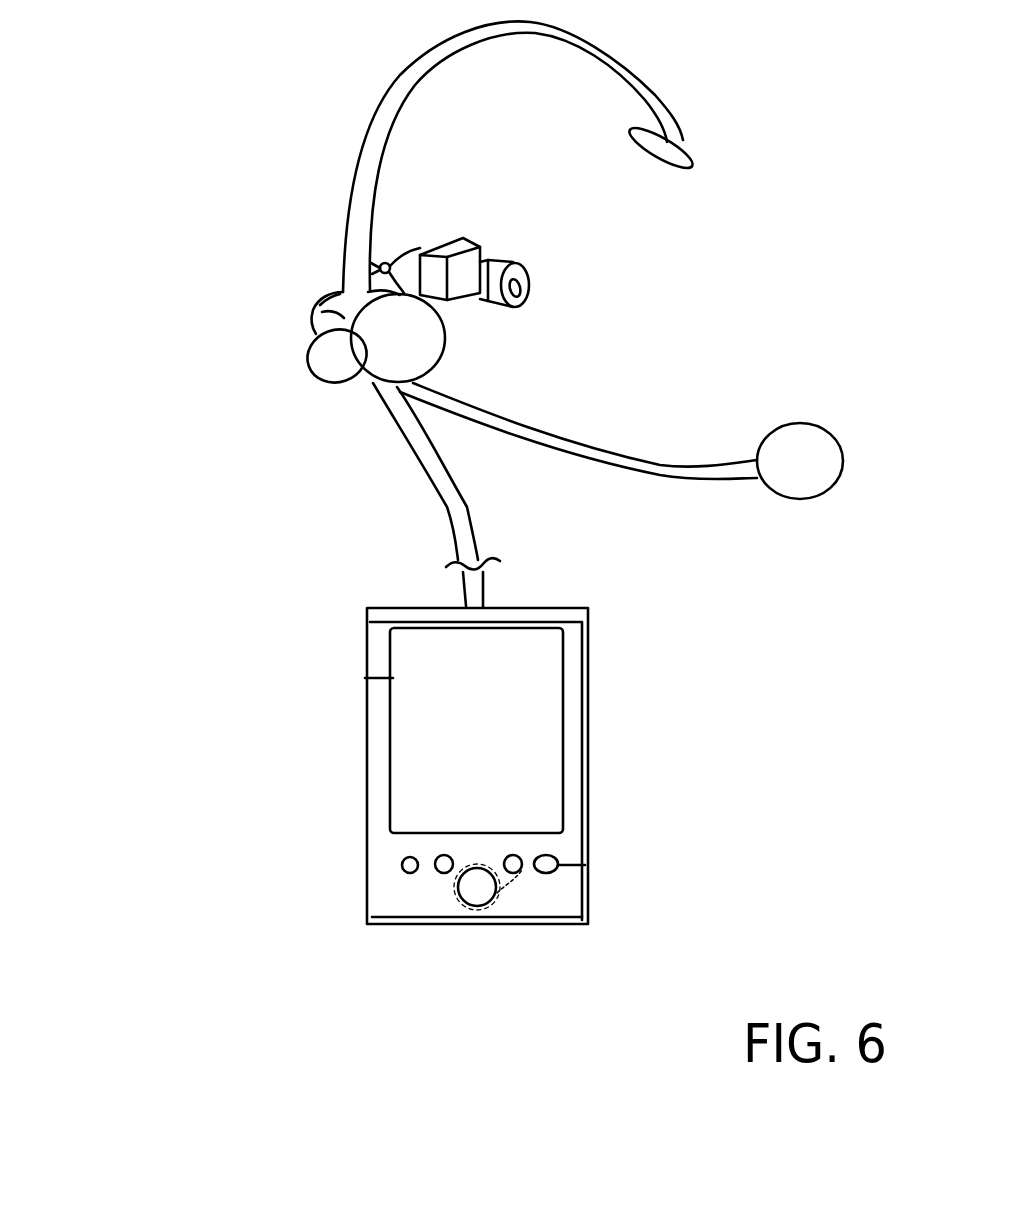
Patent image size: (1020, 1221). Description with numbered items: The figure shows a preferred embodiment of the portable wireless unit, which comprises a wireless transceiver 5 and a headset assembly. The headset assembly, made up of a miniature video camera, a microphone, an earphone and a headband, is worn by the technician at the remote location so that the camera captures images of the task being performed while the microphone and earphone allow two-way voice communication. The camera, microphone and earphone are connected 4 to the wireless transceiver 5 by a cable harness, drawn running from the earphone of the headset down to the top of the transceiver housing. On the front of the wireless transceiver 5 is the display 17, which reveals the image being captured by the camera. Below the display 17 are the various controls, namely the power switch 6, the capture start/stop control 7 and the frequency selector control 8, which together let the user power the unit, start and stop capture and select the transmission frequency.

The connection 4 is at (407, 445).
The wireless transceiver 5 is at (588, 715).
The display 17 is at (417, 733).
The power switch 6 is at (412, 885).
The capture start/stop control 7 is at (435, 885).
The frequency selector control 8 is at (453, 893).